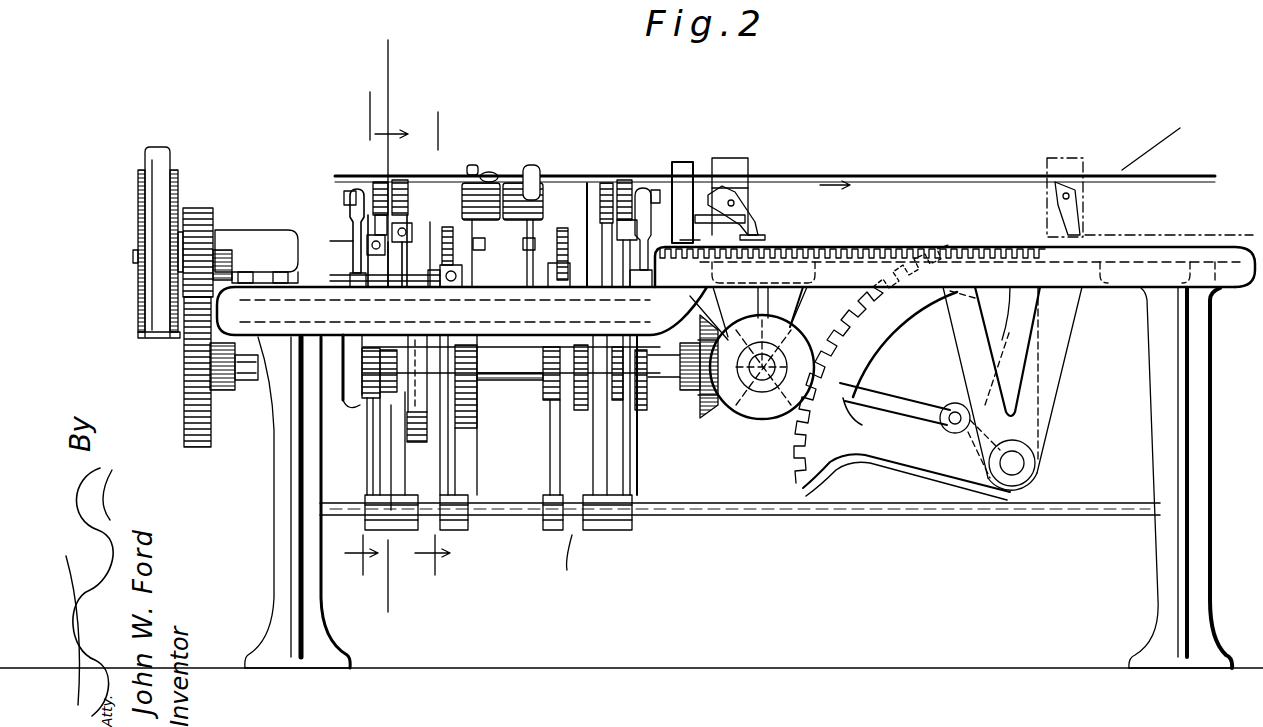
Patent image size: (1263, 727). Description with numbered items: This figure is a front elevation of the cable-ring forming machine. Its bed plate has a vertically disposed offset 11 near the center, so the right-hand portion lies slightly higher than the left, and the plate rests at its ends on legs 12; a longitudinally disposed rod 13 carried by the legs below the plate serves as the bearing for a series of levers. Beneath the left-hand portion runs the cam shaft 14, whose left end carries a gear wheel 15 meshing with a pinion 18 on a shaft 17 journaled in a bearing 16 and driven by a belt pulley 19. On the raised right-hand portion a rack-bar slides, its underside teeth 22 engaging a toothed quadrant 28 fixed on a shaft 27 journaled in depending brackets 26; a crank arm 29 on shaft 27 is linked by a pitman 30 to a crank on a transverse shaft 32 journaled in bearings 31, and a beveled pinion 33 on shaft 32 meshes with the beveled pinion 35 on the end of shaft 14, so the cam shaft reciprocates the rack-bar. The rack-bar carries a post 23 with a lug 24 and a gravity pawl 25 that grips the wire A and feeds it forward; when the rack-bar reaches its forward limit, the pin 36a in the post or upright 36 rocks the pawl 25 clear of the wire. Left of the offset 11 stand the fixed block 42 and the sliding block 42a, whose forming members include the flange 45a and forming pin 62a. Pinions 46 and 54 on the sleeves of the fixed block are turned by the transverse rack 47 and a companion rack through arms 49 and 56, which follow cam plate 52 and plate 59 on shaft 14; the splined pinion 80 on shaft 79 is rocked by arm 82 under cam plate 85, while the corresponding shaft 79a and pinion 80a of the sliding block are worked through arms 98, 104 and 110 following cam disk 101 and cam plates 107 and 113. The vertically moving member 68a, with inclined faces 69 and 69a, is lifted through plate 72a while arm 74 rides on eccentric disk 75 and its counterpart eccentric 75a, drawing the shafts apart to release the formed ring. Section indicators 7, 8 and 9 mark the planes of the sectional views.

The section line 7 is at (376, 331).
The section line 8 is at (383, 325).
The section line 9 is at (432, 343).
The offset 11 is at (705, 300).
The legs 12 is at (278, 600).
The shaft or rod 13 is at (757, 516).
The shaft 14 is at (250, 385).
The gear wheel 15 is at (184, 418).
The bearing 16 is at (243, 240).
The shaft 17 is at (133, 257).
The pinion 18 is at (197, 206).
The belt-driven pulley 19 is at (143, 326).
The teeth 22 is at (860, 245).
The post 23 is at (748, 194).
The lug 24 is at (730, 160).
The gravity pawl 25 is at (762, 228).
The brackets 26 is at (1057, 350).
The shaft 27 is at (1024, 463).
The toothed quadrant 28 is at (893, 318).
The crank arm 29 is at (963, 432).
The pitman 30 is at (900, 403).
The bearings 31 is at (795, 306).
The shaft 32 is at (763, 380).
The beveled pinion 33 is at (748, 398).
The beveled pinion 35 is at (707, 420).
The post or upright 36 is at (684, 160).
The pin 36a is at (706, 213).
The block 42 is at (569, 235).
The block 42a is at (418, 193).
The flange 45a is at (477, 163).
The pinion 46 is at (605, 182).
The rack-bar 47 is at (578, 200).
The arm 49 is at (590, 500).
The cam plate 52 is at (584, 412).
The pinion 54 is at (630, 180).
The arm 56 is at (650, 470).
The plate 59 is at (648, 400).
The forming pin 62a is at (493, 172).
The vertically moving member 68a is at (328, 242).
The inclined face 69 is at (652, 237).
The inclined face 69a is at (350, 226).
The elongated plate 72a is at (337, 277).
The arm 74 is at (703, 335).
The eccentric disk 75 is at (678, 345).
The eccentric 75a is at (345, 400).
The shaft 79 is at (520, 252).
The shaft 79a is at (478, 246).
The pinion 80 is at (561, 249).
The pinion 80a is at (522, 248).
The arm or lever 82 is at (550, 475).
The cam plate 85 is at (563, 392).
The arm 98 is at (373, 430).
The cam disk 101 is at (332, 367).
The arm or lever 104 is at (404, 462).
The cam plate 107 is at (418, 403).
The arm or lever 110 is at (449, 452).
The cam plate 113 is at (468, 390).
The wire A is at (775, 149).